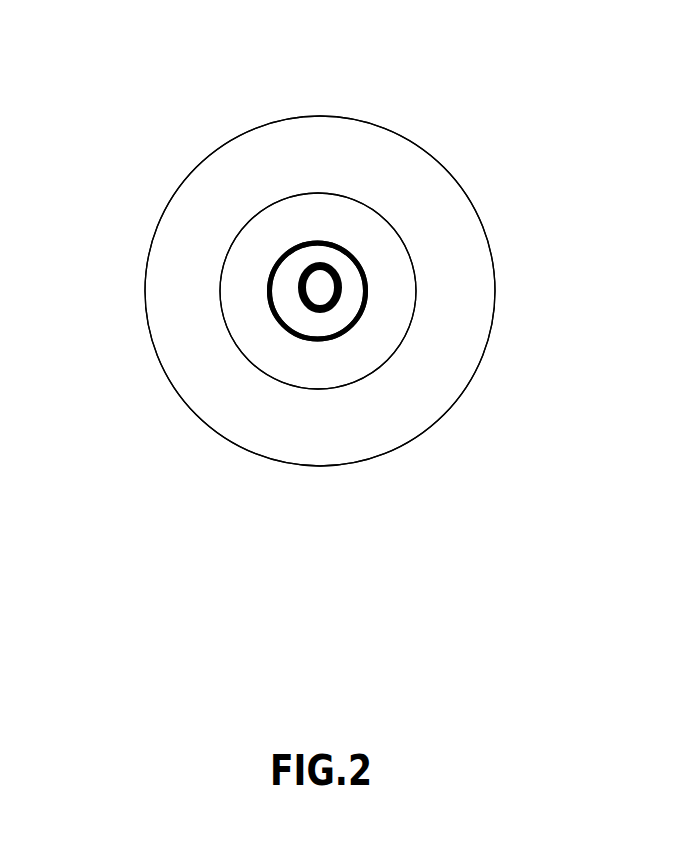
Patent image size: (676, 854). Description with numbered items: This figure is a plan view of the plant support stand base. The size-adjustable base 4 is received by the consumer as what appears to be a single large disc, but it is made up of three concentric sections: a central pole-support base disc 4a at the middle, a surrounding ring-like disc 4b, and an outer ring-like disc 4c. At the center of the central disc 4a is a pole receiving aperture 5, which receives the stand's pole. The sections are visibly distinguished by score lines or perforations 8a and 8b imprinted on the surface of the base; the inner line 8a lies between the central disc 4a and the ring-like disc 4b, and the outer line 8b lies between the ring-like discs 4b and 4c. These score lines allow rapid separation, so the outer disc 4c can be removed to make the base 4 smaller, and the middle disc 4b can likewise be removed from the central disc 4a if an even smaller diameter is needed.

The size-adjustable base 4 is at (443, 163).
The central pole-support base disc 4a is at (370, 285).
The ring-like disc 4b is at (373, 326).
The ring-like disc 4c is at (422, 371).
The pole receiving aperture 5 is at (318, 264).
The score line or perforation 8a is at (272, 269).
The score line or perforation 8b is at (233, 340).